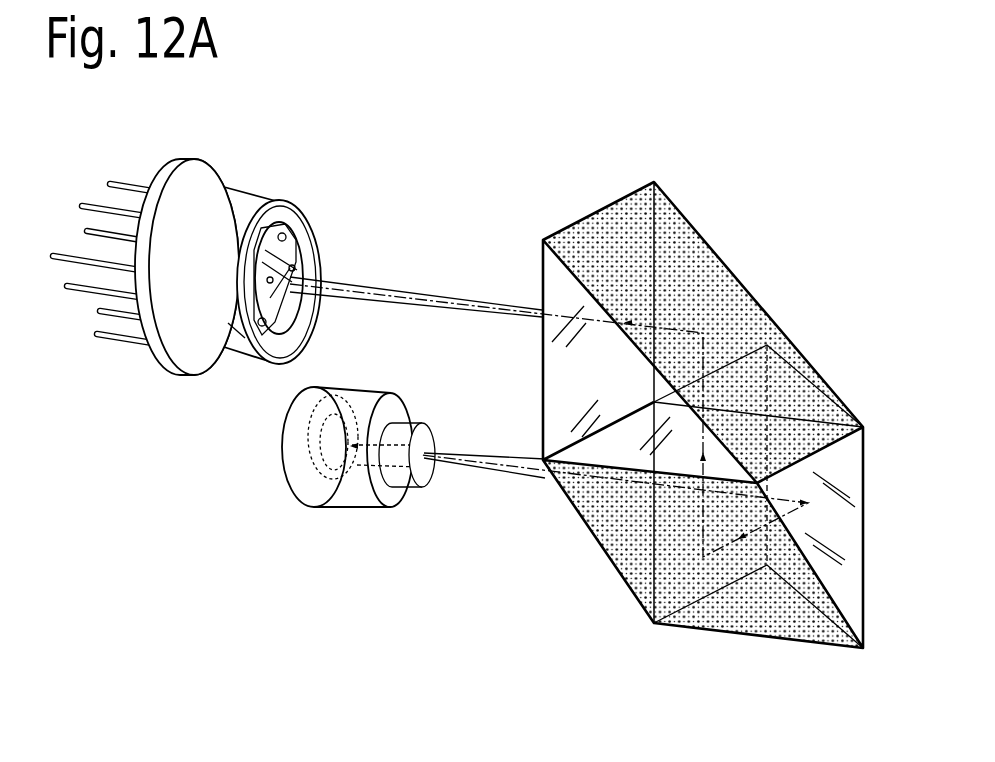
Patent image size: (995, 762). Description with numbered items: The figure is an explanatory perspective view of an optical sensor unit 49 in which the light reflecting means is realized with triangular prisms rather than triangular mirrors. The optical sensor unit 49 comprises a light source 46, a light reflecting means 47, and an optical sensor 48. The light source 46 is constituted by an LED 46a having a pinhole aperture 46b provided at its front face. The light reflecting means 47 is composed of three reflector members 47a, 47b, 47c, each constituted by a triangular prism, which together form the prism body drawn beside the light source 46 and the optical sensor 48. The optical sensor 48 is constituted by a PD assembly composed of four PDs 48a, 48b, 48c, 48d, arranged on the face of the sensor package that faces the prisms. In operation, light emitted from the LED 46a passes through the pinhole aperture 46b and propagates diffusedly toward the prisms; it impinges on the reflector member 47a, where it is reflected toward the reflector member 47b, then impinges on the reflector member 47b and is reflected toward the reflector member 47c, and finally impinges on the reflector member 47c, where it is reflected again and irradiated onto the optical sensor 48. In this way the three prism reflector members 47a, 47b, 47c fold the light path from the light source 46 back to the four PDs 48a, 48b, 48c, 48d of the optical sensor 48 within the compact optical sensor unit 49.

The light source 46 is at (318, 512).
The LED 46a is at (322, 460).
The pinhole aperture 46b is at (425, 455).
The light reflecting means 47 is at (798, 207).
The reflector member 47a is at (781, 378).
The reflector member 47b is at (610, 540).
The reflector member 47c is at (606, 227).
The optical sensor 48 is at (212, 376).
The PD 48a is at (272, 281).
The PD 48b is at (282, 233).
The PD 48c is at (272, 300).
The PD 48d is at (293, 268).
The optical sensor unit 49 is at (420, 178).